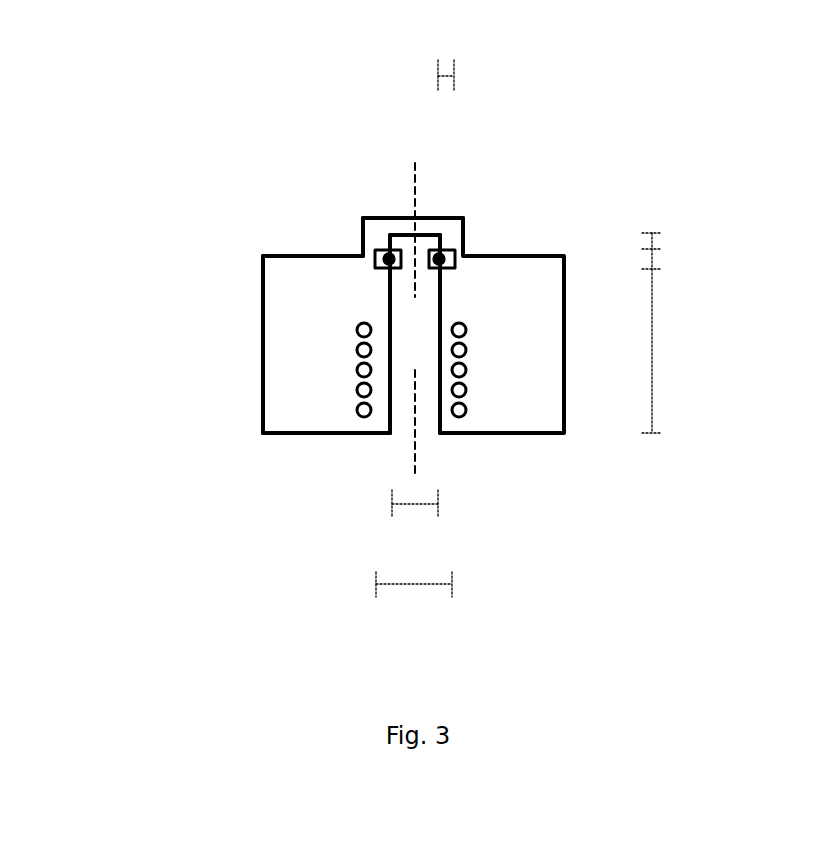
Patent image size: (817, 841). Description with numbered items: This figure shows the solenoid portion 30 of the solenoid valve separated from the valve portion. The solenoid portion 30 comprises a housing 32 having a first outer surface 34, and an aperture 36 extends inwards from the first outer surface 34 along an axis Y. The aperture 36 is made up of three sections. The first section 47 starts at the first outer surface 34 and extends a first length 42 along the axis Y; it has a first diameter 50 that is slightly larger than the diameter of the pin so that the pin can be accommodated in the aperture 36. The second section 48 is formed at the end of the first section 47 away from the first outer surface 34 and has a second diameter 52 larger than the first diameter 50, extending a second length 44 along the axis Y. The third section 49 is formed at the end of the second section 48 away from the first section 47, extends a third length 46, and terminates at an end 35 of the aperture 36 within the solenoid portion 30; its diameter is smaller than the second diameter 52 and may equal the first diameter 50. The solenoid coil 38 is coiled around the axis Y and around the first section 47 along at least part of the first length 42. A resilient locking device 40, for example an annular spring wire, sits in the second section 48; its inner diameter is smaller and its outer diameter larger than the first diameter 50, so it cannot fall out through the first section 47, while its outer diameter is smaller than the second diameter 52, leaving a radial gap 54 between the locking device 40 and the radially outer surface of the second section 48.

The solenoid portion 30 is at (574, 86).
The housing 32 is at (262, 337).
The first outer surface 34 is at (282, 436).
The end of the aperture 35 is at (402, 232).
The aperture 36 is at (426, 350).
The solenoid coil 38 is at (357, 352).
The resilient locking device 40 is at (373, 252).
The first length 42 is at (652, 353).
The second length 44 is at (652, 258).
The third length 46 is at (653, 242).
The first section 47 is at (387, 282).
The second section 48 is at (464, 253).
The third section 49 is at (432, 240).
The first diameter 50 is at (415, 516).
The second diameter 52 is at (414, 597).
The radial gap 54 is at (445, 60).